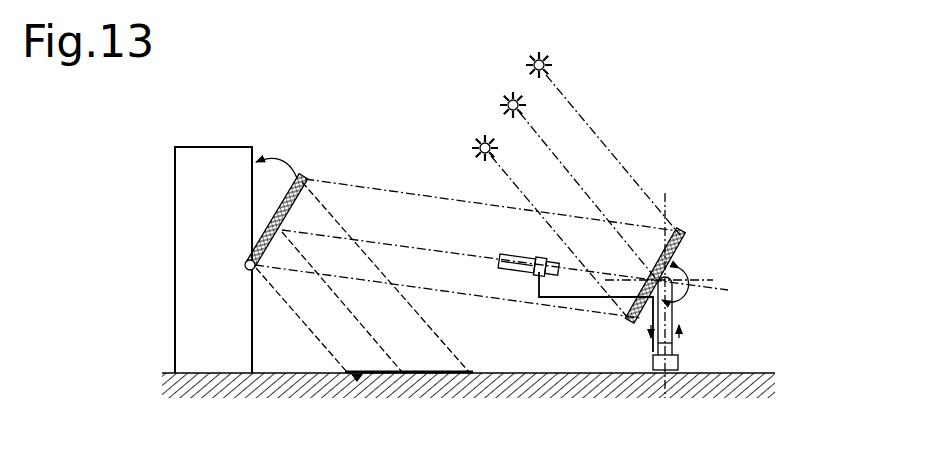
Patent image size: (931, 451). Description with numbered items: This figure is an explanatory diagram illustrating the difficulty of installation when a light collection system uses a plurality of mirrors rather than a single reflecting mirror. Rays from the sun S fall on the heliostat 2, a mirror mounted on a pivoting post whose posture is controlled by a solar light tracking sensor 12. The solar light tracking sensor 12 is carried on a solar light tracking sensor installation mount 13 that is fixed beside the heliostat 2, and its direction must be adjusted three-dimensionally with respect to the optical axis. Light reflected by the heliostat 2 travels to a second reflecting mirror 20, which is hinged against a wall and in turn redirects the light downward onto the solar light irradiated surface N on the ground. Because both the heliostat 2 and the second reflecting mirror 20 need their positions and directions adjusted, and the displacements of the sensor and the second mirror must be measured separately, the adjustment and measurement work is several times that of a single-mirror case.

The heliostat 2 is at (686, 244).
The solar light tracking sensor 12 is at (524, 279).
The solar light tracking sensor installation mount 13 is at (587, 301).
The second reflecting mirror 20 is at (303, 171).
The sun S is at (530, 103).
The solar light irradiated surface N is at (337, 390).